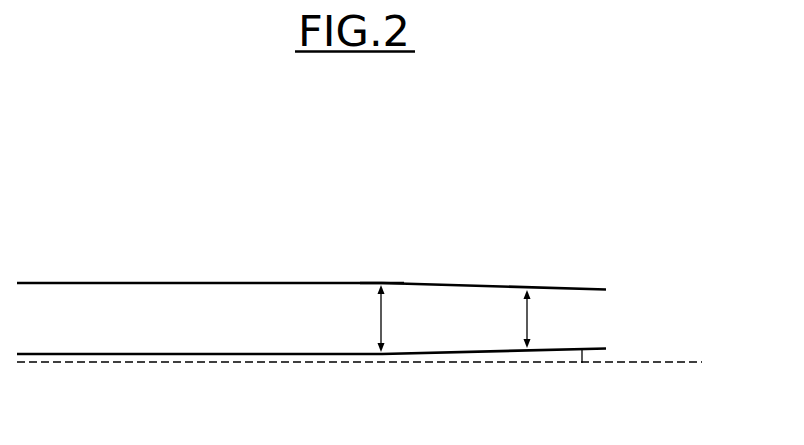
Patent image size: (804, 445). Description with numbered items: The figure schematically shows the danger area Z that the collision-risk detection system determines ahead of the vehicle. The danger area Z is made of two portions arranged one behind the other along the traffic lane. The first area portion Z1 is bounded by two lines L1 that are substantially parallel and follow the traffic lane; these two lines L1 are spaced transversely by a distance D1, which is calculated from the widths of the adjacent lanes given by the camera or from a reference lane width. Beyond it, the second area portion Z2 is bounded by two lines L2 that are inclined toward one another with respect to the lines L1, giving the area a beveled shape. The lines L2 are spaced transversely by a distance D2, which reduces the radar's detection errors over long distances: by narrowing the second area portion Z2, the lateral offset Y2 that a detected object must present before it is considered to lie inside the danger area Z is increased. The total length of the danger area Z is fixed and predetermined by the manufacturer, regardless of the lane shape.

The first lines L1 is at (267, 349).
The second lines L2 is at (570, 344).
The danger area Z is at (382, 270).
The first area portion Z1 is at (199, 290).
The second area portion Z2 is at (494, 291).
The distance D1 is at (368, 318).
The distance D2 is at (542, 319).
The lateral offset Y2 is at (586, 367).